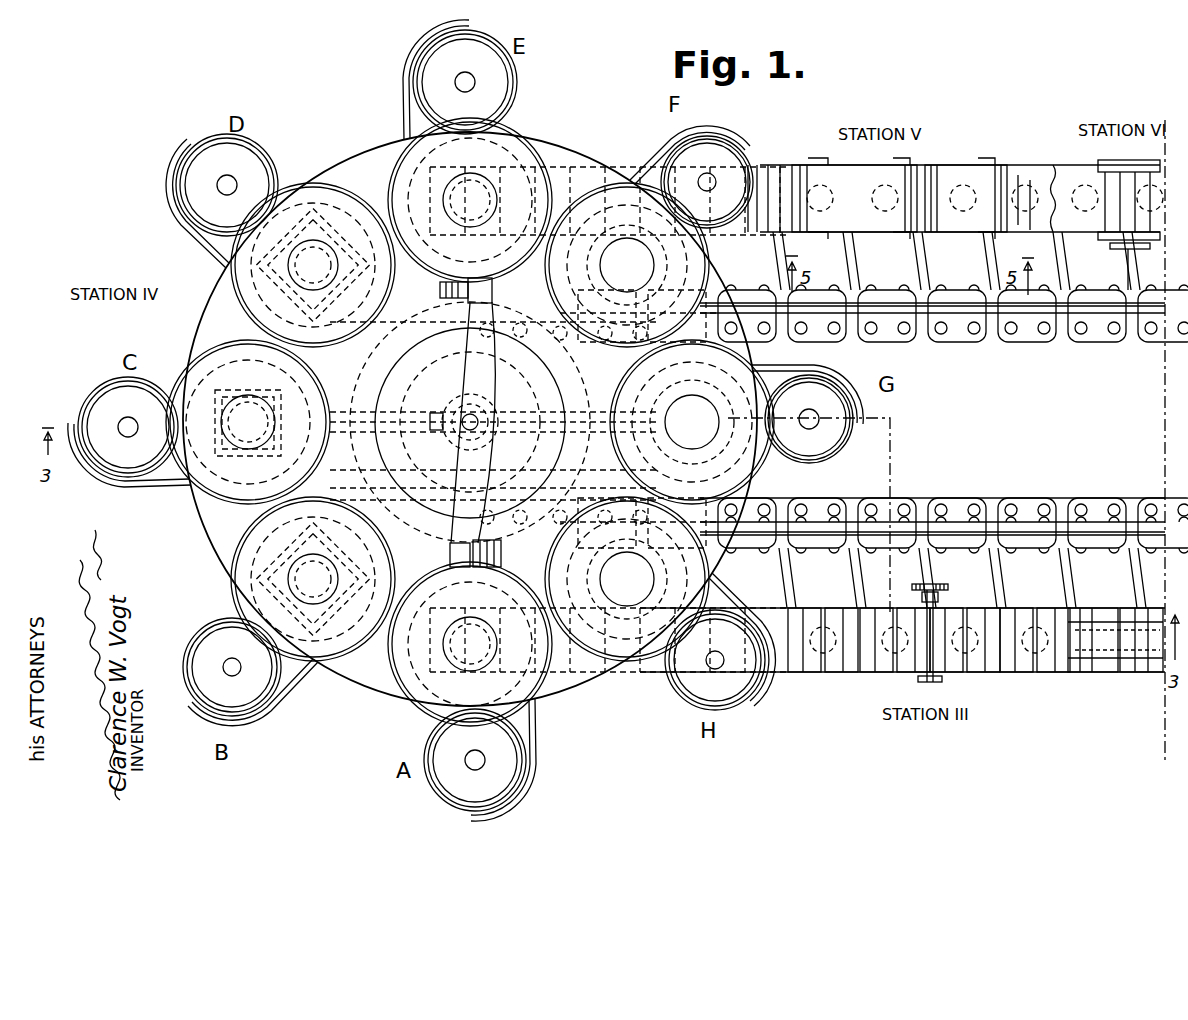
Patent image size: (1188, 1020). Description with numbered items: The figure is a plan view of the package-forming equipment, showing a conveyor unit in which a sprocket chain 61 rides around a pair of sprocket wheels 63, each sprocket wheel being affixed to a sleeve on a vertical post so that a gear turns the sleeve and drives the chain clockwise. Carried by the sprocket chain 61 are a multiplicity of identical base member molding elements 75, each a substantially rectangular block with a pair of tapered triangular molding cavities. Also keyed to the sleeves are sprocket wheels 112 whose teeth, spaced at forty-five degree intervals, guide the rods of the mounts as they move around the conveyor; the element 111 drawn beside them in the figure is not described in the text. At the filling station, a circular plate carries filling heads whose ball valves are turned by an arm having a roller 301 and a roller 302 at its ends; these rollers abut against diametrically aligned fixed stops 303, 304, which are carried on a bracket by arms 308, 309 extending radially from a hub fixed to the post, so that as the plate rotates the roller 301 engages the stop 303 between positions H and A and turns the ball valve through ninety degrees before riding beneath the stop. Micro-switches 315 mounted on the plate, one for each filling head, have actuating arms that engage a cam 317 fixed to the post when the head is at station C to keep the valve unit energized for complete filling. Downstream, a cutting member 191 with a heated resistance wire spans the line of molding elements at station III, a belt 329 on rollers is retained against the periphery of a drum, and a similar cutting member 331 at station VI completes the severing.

The sprocket chain 61 is at (638, 322).
The sprocket wheel 63 is at (570, 388).
The base member molding element 75 is at (815, 683).
The tube socket 111 is at (680, 400).
The sprocket wheel 112 is at (632, 482).
The cutting member 191 is at (951, 689).
The roller 301 is at (501, 552).
The roller 302 is at (440, 290).
The stop 303 is at (450, 555).
The stop 304 is at (492, 290).
The arm 308 is at (487, 357).
The arm 309 is at (490, 493).
The micro-switch 315 is at (378, 452).
The cam 317 is at (432, 417).
The belt 329 is at (938, 170).
The cutting member 331 is at (1088, 157).